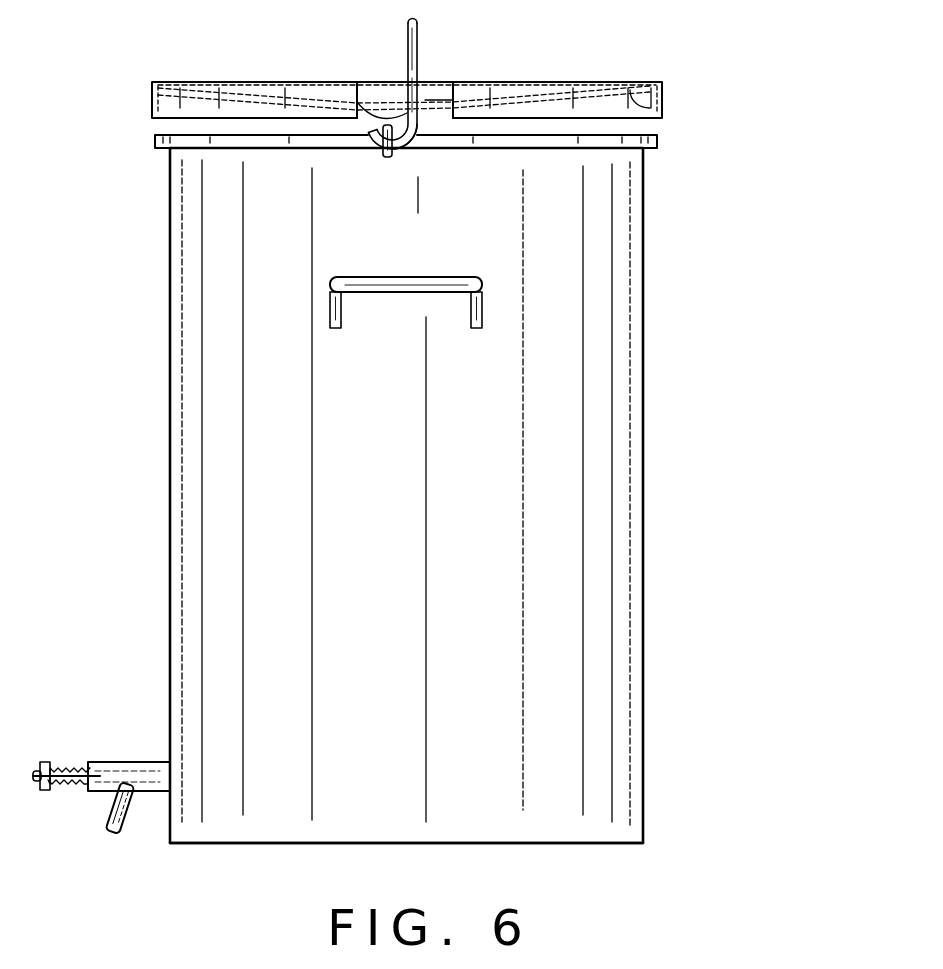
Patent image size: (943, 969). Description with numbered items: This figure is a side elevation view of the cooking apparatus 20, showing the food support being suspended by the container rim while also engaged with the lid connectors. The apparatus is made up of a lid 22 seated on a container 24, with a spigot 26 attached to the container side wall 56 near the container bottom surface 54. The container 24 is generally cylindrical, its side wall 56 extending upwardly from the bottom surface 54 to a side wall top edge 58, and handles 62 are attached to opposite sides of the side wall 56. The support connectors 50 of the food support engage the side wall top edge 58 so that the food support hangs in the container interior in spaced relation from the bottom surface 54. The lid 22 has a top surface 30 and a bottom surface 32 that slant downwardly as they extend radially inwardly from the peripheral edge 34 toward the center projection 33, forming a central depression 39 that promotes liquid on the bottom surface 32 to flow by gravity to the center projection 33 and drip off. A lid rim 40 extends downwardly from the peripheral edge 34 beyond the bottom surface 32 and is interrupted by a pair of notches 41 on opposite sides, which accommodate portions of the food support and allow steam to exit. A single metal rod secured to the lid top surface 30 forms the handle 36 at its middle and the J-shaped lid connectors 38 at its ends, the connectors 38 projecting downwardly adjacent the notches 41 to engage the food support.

The cooking apparatus 20 is at (688, 45).
The lid 22 is at (183, 82).
The container 24 is at (627, 354).
The spigot 26 is at (128, 762).
The lid top surface 30 is at (243, 82).
The lid bottom surface 32 is at (662, 103).
The center projection 33 is at (362, 105).
The peripheral edge 34 is at (662, 82).
The handle 36 is at (418, 27).
The lid connectors 38 is at (410, 145).
The central depression 39 is at (432, 103).
The lid rim 40 is at (152, 103).
The notches 41 is at (375, 82).
The support connectors 50 is at (382, 157).
The container bottom surface 54 is at (613, 853).
The container side wall 56 is at (643, 572).
The side wall top edge 58 is at (657, 143).
The container handles 62 is at (377, 292).